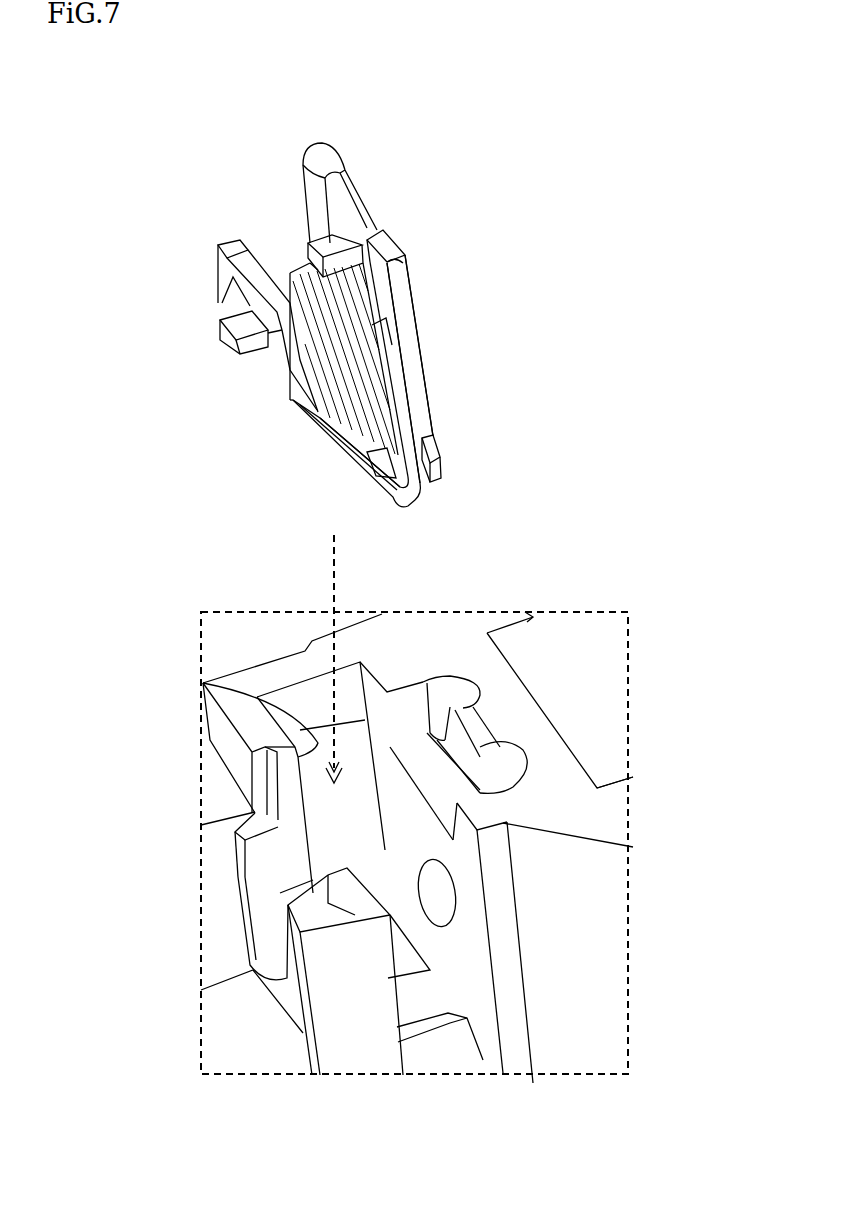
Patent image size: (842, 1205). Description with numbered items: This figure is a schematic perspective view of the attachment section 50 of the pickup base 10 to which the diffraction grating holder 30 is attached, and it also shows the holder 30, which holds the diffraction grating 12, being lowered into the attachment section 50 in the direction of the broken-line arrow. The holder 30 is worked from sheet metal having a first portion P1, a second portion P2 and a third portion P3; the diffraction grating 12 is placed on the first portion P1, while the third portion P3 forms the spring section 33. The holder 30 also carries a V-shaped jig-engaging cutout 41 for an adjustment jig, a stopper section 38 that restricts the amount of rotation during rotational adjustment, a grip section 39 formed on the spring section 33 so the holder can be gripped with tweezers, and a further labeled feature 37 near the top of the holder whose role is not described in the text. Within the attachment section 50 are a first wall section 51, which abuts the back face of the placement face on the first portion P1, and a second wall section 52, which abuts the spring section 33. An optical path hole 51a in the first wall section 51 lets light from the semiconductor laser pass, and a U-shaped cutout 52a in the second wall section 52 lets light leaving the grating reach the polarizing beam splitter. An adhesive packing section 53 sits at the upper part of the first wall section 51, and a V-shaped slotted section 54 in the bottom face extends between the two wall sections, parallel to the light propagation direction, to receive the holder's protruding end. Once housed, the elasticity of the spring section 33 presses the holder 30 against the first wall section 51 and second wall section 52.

The pickup base 10 is at (605, 814).
The diffraction grating 12 is at (303, 267).
The diffraction grating holder 30 is at (381, 147).
The spring section 33 is at (305, 409).
The projection 37 is at (316, 243).
The stopper section 38 is at (445, 483).
The grip section 39 is at (226, 326).
The jig-engaging portion (cutout) 41 is at (360, 222).
The attachment section 50 is at (362, 758).
The first wall section 51 is at (476, 926).
The optical path hole 51a is at (442, 903).
The second wall section 52 is at (203, 683).
The cutout 52a is at (275, 876).
The adhesive packing section 53 is at (440, 780).
The slotted section 54 is at (430, 1013).
The first portion P1 is at (420, 335).
The second portion P2 is at (408, 395).
The third portion P3 is at (320, 420).